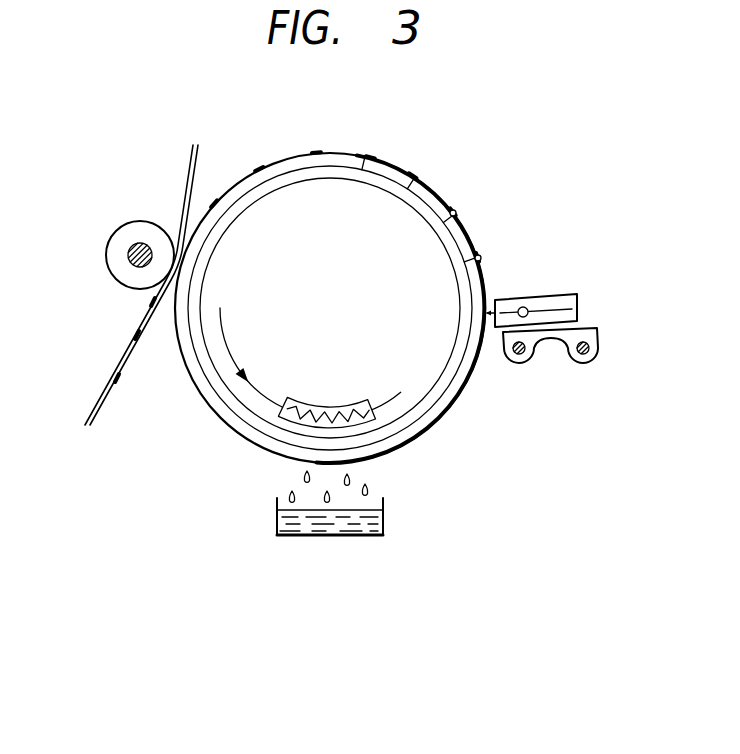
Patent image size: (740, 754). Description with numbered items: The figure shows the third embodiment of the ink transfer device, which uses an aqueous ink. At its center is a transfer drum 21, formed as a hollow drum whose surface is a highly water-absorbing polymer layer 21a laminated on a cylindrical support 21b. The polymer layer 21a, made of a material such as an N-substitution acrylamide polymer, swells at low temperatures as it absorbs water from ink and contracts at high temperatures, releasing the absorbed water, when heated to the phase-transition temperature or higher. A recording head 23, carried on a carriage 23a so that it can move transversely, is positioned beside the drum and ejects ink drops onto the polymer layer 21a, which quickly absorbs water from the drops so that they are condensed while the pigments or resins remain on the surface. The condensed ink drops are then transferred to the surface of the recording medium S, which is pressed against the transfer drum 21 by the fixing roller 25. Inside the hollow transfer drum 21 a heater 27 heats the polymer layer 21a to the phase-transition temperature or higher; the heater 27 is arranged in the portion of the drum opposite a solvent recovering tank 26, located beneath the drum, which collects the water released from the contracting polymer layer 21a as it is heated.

The transfer drum 21 is at (330, 261).
The highly water-absorbing polymer layer 21a is at (316, 153).
The cylindrical support 21b is at (285, 106).
The recording head 23 is at (572, 308).
The carriage 23a is at (597, 333).
The fixing roller 25 is at (122, 238).
The solvent recovering tank 26 is at (383, 515).
The heater 27 is at (331, 406).
The recording medium S is at (105, 392).